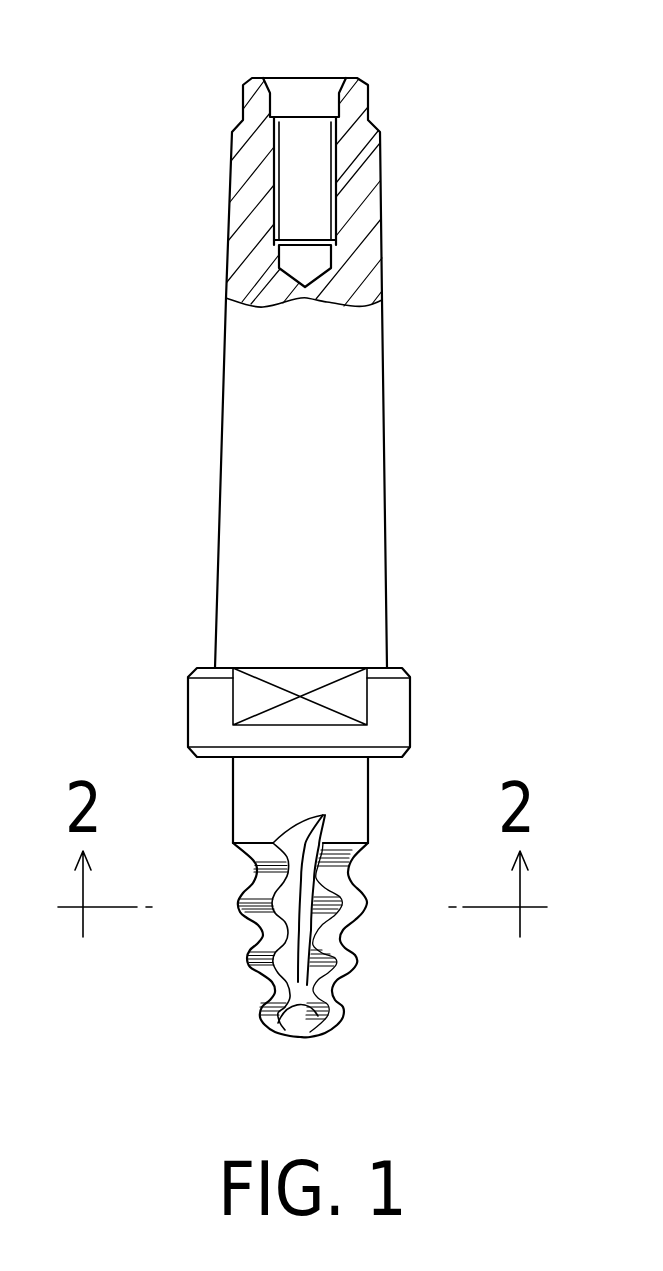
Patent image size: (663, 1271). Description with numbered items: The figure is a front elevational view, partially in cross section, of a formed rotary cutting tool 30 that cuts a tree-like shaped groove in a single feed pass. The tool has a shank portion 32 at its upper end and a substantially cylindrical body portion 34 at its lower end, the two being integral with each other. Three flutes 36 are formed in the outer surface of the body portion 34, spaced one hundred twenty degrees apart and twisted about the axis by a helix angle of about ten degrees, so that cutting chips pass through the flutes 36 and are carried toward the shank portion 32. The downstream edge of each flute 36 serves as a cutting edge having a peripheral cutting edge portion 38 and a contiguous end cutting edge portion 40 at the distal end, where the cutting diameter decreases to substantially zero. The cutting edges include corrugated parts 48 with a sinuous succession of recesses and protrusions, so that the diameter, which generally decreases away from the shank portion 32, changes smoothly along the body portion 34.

The formed rotary cutting tool 30 is at (428, 62).
The shank portion 32 is at (366, 450).
The body portion 34 is at (242, 1057).
The flute 36 is at (300, 842).
The peripheral cutting edge portion 38 is at (340, 967).
The end cutting edge portion 40 is at (312, 1032).
The corrugated part 48 is at (243, 920).